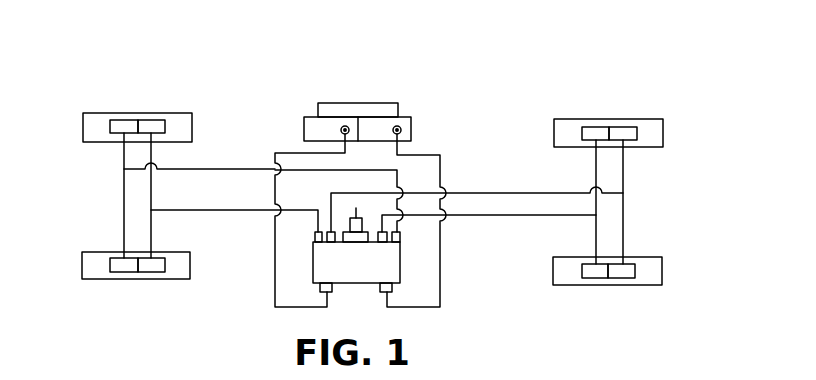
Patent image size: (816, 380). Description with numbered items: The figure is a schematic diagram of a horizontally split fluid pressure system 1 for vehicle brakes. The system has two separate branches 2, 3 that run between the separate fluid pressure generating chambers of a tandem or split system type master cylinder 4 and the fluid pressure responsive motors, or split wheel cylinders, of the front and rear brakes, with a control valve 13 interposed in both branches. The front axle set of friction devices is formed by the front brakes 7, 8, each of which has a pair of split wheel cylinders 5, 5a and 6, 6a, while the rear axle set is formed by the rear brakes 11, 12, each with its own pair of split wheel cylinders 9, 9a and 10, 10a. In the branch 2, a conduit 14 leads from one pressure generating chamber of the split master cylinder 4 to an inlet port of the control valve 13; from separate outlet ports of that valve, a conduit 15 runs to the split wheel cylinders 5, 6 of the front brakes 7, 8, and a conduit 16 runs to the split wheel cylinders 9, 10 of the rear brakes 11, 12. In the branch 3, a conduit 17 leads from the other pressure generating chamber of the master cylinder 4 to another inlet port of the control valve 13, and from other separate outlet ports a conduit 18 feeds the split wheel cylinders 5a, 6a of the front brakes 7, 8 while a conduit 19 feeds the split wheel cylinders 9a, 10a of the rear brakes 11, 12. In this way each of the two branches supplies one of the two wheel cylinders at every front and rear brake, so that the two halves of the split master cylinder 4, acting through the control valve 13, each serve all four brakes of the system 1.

The horizontally split fluid pressure system 1 is at (247, 111).
The branch 2 is at (481, 243).
The branch 3 is at (249, 245).
The split system type master cylinder 4 is at (370, 108).
The split wheel cylinder 5 is at (588, 126).
The split wheel cylinder 5a is at (632, 126).
The split wheel cylinder 6 is at (588, 279).
The split wheel cylinder 6a is at (625, 279).
The front brake 7 is at (657, 131).
The front brake 8 is at (653, 270).
The split wheel cylinder 9 is at (118, 123).
The split wheel cylinder 9a is at (158, 123).
The split wheel cylinder 10 is at (118, 274).
The split wheel cylinder 10a is at (155, 274).
The rear brake 11 is at (88, 124).
The rear brake 12 is at (88, 263).
The control valve 13 is at (350, 269).
The conduit 14 is at (435, 156).
The conduit 15 is at (524, 218).
The conduit 16 is at (232, 168).
The conduit 17 is at (273, 193).
The conduit 18 is at (520, 192).
The conduit 19 is at (210, 211).